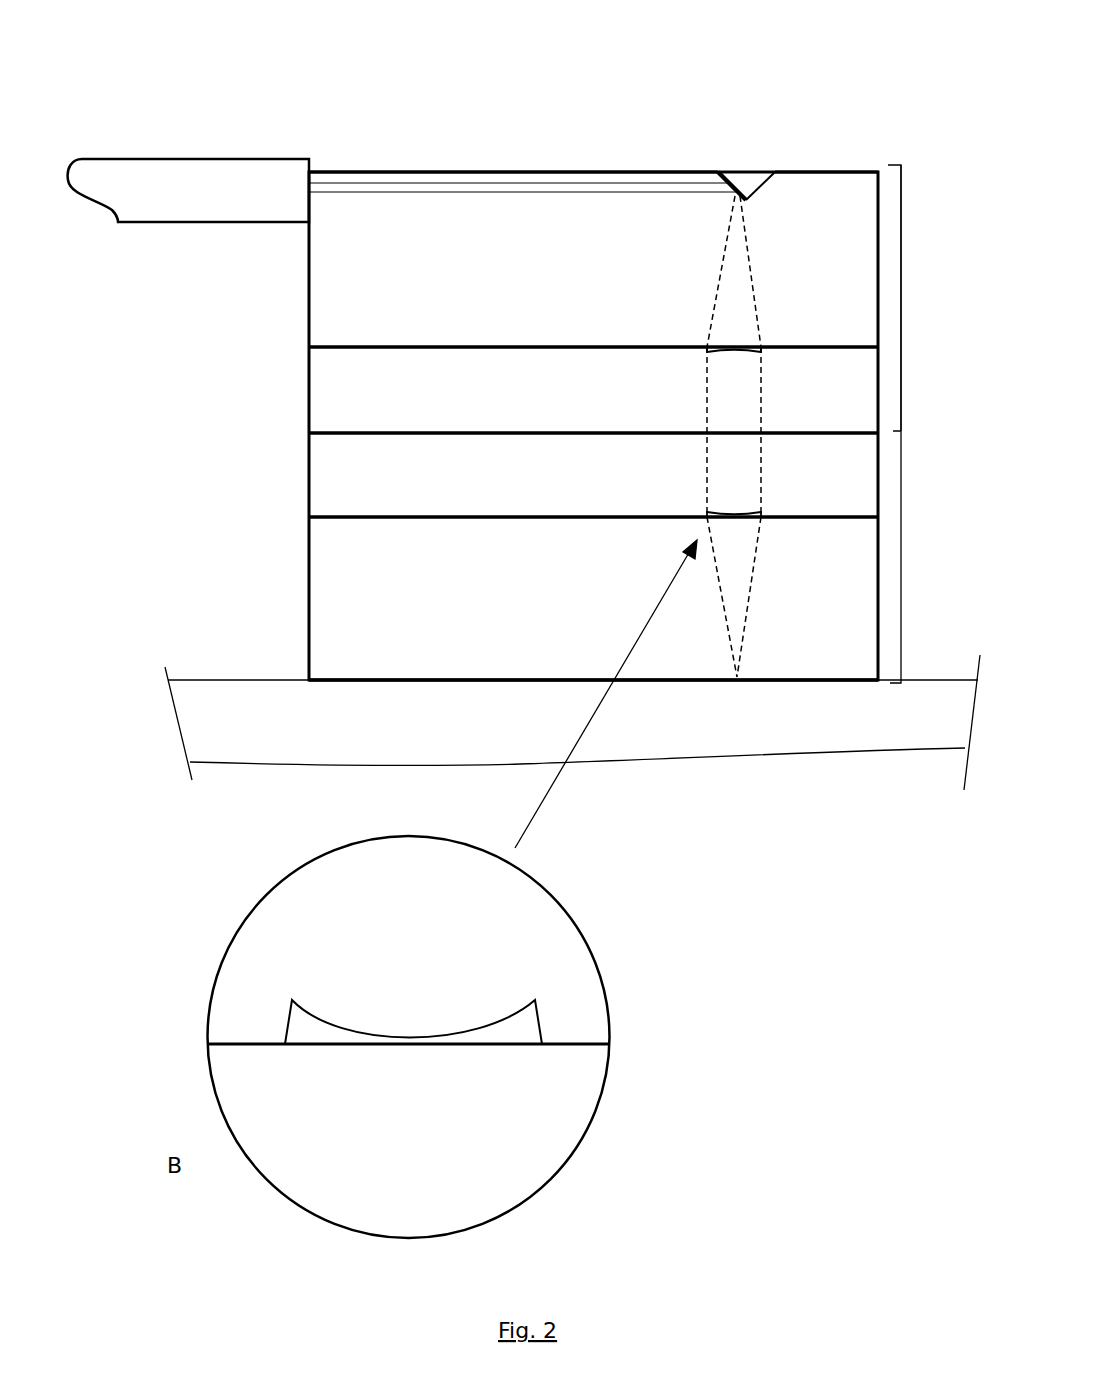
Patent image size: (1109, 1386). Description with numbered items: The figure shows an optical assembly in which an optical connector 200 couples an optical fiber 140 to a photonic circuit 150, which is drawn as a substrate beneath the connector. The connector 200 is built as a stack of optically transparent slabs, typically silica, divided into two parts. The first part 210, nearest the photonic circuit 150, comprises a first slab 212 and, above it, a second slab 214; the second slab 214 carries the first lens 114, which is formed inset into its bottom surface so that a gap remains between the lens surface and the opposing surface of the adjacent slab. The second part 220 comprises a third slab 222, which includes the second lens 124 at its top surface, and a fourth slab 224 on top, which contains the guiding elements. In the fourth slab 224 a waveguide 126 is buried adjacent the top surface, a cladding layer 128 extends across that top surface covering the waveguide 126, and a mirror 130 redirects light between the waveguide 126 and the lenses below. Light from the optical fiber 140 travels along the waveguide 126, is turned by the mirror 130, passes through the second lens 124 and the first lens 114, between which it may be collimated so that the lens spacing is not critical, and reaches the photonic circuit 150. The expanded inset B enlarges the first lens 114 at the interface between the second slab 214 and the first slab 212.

The optical connector 200 is at (366, 72).
The optical fiber 140 is at (212, 188).
The waveguide 126 is at (580, 190).
The cladding layer 128 is at (633, 178).
The mirror 130 is at (725, 172).
The fourth slab 224 is at (325, 303).
The third slab 222 is at (335, 405).
The second slab 214 is at (325, 477).
The first slab 212 is at (335, 622).
The second lens 124 is at (733, 353).
The first lens 114 is at (733, 512).
The second part 220 is at (902, 307).
The first part 210 is at (902, 548).
The photonic circuit 150 is at (843, 740).